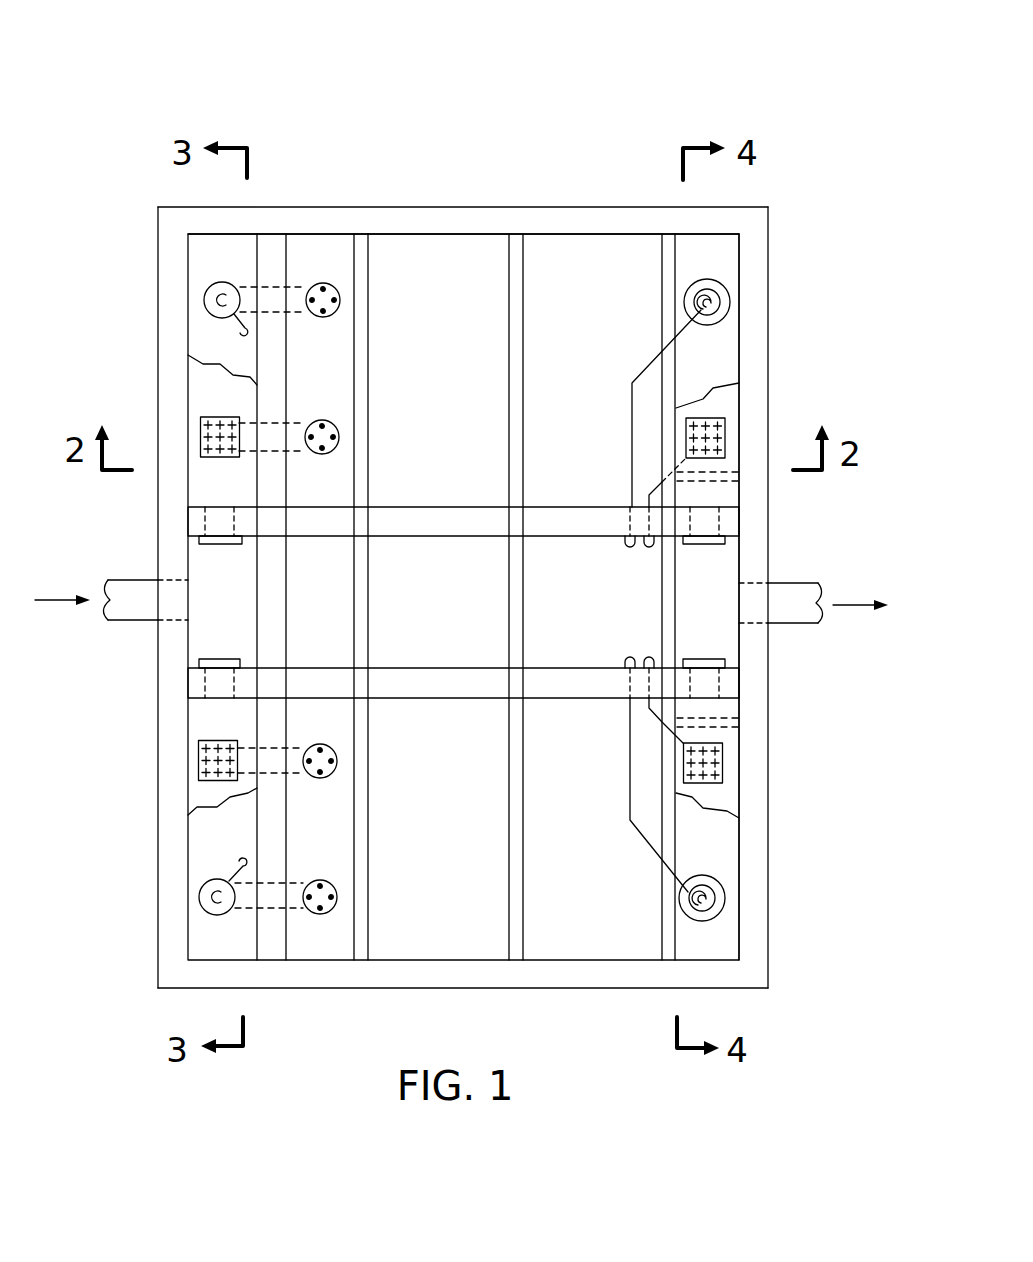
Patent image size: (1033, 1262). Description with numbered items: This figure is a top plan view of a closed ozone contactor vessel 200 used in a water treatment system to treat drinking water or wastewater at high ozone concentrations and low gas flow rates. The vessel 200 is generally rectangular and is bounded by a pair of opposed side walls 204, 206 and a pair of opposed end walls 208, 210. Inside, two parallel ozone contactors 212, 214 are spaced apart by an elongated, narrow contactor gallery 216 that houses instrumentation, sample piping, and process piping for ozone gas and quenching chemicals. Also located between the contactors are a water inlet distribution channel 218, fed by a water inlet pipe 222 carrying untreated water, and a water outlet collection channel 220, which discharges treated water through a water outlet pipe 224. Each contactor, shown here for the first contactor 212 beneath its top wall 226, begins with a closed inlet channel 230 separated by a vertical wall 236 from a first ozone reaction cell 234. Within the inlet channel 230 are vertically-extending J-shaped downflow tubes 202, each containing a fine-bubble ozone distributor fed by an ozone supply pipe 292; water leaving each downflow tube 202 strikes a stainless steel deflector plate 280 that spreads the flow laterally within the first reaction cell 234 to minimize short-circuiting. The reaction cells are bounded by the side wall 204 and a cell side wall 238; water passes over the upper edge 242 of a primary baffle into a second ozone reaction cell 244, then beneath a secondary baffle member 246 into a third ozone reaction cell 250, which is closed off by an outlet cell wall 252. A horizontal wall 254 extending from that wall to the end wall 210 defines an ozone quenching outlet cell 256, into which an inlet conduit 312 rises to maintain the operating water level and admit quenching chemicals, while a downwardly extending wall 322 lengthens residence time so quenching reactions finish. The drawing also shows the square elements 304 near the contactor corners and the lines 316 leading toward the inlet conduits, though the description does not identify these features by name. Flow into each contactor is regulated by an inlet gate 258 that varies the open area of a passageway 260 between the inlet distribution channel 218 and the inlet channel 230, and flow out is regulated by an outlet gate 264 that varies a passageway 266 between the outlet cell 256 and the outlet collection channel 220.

The ozone contactor vessel 200 is at (558, 106).
The J-shaped downflow tube 202 is at (205, 297).
The side wall 204 is at (490, 208).
The side wall 206 is at (463, 985).
The end wall 208 is at (158, 663).
The end wall 210 is at (762, 703).
The first ozone contactor 212 is at (810, 250).
The second ozone contactor 214 is at (790, 848).
The contactor gallery 216 is at (448, 629).
The water inlet distribution channel 218 is at (248, 636).
The water outlet collection channel 220 is at (687, 620).
The water inlet pipe 222 is at (118, 578).
The water outlet pipe 224 is at (790, 625).
The top wall 226 is at (198, 490).
The inlet channel 230 is at (198, 345).
The first ozone reaction cell 234 is at (343, 508).
The vertical wall 236 is at (276, 240).
The cell side wall 238 is at (433, 508).
The upper edge 242 is at (372, 258).
The second ozone reaction cell 244 is at (418, 372).
The secondary baffle member 246 is at (510, 313).
The third ozone reaction cell 250 is at (554, 324).
The outlet cell wall 252 is at (663, 258).
The horizontal wall 254 is at (730, 402).
The ozone quenching outlet cell 256 is at (727, 357).
The inlet gate 258 is at (220, 546).
The passageway 260 is at (237, 515).
The outlet gate 264 is at (708, 547).
The passageway 266 is at (718, 525).
The deflector plate 280 is at (323, 318).
The ozone supply pipe 292 is at (241, 328).
The electrode 304 is at (201, 430).
The inlet conduit 312 is at (730, 305).
The conductor 316 is at (632, 405).
The downwardly extending wall 322 is at (710, 482).